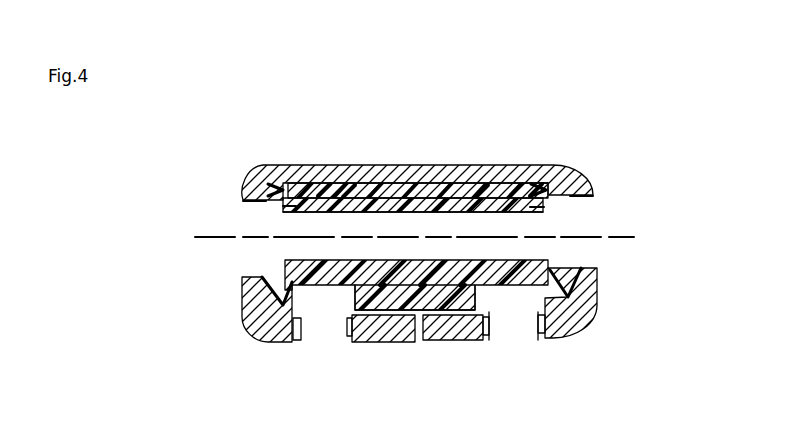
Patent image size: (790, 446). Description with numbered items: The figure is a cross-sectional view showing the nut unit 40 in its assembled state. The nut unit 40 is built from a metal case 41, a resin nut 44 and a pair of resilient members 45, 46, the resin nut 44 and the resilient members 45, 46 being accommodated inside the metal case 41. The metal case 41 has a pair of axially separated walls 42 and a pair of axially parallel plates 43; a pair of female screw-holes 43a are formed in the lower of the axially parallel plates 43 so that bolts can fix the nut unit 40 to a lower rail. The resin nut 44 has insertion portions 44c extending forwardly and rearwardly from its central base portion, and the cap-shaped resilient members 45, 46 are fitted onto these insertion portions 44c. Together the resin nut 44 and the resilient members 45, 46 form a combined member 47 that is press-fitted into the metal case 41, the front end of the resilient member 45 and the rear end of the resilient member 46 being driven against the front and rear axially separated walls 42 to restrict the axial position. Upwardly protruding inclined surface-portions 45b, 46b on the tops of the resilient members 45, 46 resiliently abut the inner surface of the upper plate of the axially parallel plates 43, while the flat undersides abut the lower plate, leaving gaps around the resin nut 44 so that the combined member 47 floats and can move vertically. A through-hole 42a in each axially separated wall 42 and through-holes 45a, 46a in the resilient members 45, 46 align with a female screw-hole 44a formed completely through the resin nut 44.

The nut unit 40 is at (622, 118).
The metal case 41 is at (249, 338).
The axially separated walls 42 is at (240, 198).
The through-hole 42a is at (245, 201).
The axially parallel plates 43 is at (427, 167).
The female screw-holes 43a is at (298, 341).
The resin nut 44 is at (427, 220).
The female screw-hole 44a is at (377, 212).
The insertion portions 44c is at (322, 186).
The resilient member 45 is at (276, 180).
The through-hole 45a is at (290, 208).
The inclined surface-portion 45b is at (352, 188).
The resilient member 46 is at (518, 190).
The through-hole 46a is at (545, 208).
The inclined surface-portion 46b is at (482, 185).
The combined member 47 is at (500, 292).